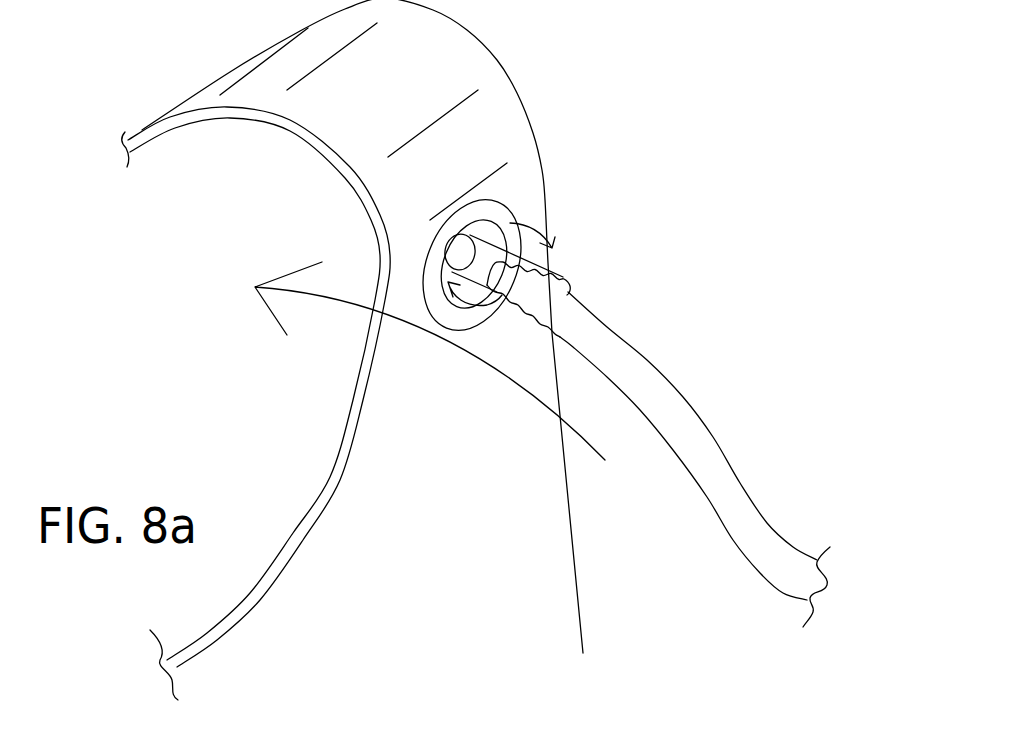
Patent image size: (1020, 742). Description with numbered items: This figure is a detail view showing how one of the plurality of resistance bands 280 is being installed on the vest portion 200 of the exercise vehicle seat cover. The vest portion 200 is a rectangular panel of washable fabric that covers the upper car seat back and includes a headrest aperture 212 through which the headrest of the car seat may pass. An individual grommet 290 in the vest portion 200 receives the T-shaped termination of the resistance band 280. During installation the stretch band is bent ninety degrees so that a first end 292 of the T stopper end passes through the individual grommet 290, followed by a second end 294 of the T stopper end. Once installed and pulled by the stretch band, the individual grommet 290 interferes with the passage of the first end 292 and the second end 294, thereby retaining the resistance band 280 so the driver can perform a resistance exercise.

The vest portion 200 is at (482, 523).
The headrest aperture 212 is at (300, 513).
The resistance bands 280 is at (718, 488).
The individual grommet 290 is at (510, 212).
The first end 292 is at (463, 255).
The second end 294 is at (565, 278).